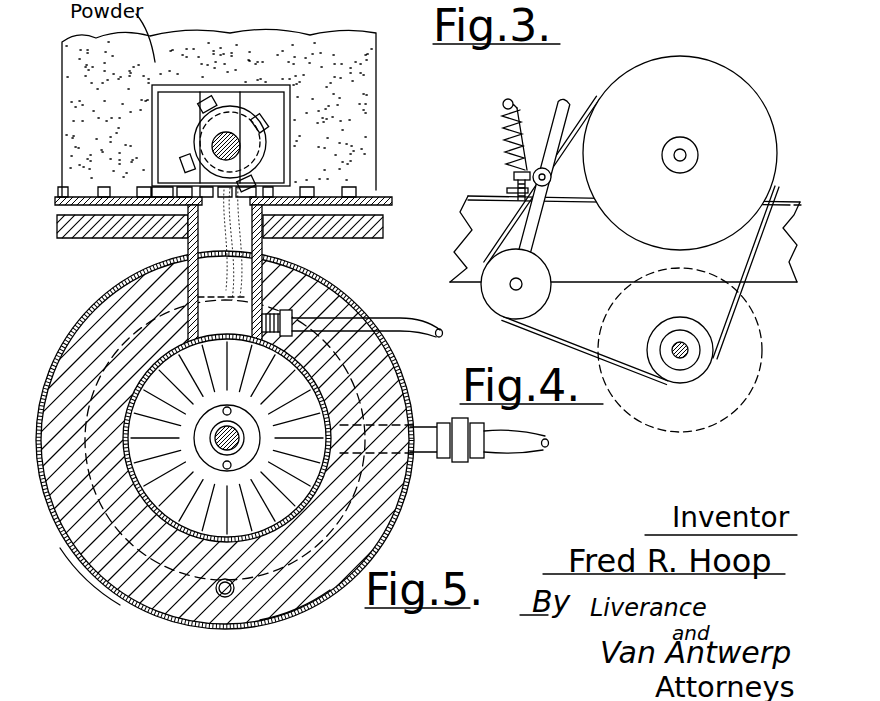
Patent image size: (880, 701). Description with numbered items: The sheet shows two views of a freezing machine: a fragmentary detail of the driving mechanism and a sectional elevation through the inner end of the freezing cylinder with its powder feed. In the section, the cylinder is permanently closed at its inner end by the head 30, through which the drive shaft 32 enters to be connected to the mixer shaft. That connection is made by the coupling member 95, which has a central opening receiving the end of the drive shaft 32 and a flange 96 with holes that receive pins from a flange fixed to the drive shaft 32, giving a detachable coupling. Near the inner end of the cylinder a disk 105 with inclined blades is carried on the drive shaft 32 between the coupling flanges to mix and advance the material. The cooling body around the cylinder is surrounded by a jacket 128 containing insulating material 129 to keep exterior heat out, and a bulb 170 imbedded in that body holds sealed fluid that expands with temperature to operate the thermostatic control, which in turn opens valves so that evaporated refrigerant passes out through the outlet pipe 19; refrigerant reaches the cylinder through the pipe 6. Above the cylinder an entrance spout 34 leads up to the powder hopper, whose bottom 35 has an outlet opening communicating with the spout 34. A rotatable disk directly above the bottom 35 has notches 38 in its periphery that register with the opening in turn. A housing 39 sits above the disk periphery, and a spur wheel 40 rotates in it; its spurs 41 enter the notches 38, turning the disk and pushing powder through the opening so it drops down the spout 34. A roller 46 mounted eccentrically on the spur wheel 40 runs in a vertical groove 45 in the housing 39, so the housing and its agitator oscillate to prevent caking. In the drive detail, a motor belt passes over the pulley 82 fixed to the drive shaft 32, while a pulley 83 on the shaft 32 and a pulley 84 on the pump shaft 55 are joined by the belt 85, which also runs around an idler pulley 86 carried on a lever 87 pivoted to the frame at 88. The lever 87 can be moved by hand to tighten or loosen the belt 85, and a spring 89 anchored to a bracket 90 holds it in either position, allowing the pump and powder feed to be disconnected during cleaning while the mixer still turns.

In FIG. 5, the pipe 6 is at (403, 318).
In FIG. 4, the pipe 6 is at (541, 214).
In FIG. 5, the outlet pipe 19 is at (503, 442).
In FIG. 5, the head 30 is at (188, 540).
In FIG. 5, the drive shaft 32 is at (222, 453).
In FIG. 4, the drive shaft 32 is at (684, 354).
In FIG. 5, the entrance spout 34 is at (225, 273).
In FIG. 5, the bottom 35 is at (66, 204).
In FIG. 5, the notches 38 is at (163, 190).
In FIG. 5, the housing 39 is at (273, 88).
In FIG. 5, the spur wheel 40 is at (201, 133).
In FIG. 5, the spurs 41 is at (239, 184).
In FIG. 5, the vertical groove 45 is at (230, 97).
In FIG. 5, the roller 46 is at (239, 112).
In FIG. 4, the pump shaft 55 is at (689, 160).
In FIG. 4, the pulley 82 is at (683, 433).
In FIG. 4, the pulley 83 is at (707, 352).
In FIG. 4, the pulley 84 is at (680, 153).
In FIG. 4, the belt 85 is at (745, 258).
In FIG. 4, the idler pulley 86 is at (505, 276).
In FIG. 4, the lever 87 is at (560, 104).
In FIG. 4, the pivot 88 is at (512, 179).
In FIG. 4, the spring 89 is at (515, 168).
In FIG. 4, the bracket 90 is at (525, 108).
In FIG. 5, the coupling member 95 is at (213, 436).
In FIG. 5, the flange 96 is at (205, 438).
In FIG. 5, the disk 105 is at (197, 427).
In FIG. 5, the jacket 128 is at (95, 570).
In FIG. 5, the insulating material 129 is at (283, 573).
In FIG. 5, the bulb 170 is at (217, 598).